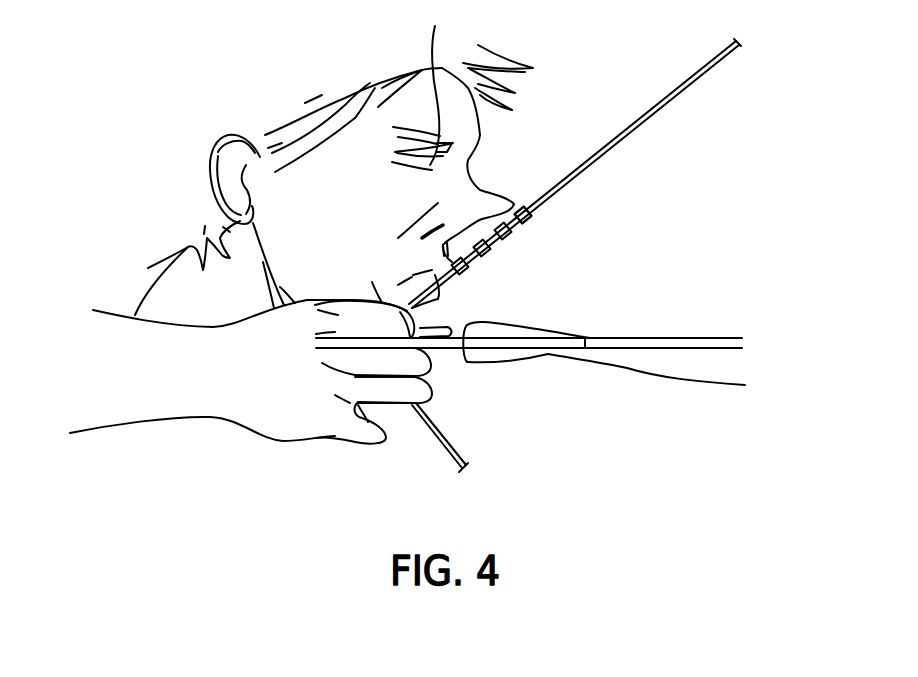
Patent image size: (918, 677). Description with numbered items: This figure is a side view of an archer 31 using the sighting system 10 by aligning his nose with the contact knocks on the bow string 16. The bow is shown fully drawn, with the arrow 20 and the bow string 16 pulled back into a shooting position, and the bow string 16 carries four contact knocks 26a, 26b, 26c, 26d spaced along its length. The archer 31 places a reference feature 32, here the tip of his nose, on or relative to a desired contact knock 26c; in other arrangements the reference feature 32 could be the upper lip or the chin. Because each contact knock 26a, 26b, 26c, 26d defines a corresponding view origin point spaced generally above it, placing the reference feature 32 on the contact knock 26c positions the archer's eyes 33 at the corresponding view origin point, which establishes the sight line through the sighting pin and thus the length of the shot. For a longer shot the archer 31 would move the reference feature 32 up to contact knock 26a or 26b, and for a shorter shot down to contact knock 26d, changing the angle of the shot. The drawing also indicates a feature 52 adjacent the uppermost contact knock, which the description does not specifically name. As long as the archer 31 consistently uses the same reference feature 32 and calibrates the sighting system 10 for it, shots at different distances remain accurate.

The sighting system 10 is at (603, 86).
The bow string 16 is at (658, 103).
The arrow 20 is at (675, 338).
The contact knock 26a is at (529, 218).
The contact knock 26b is at (508, 236).
The contact knock 26c is at (487, 254).
The contact knock 26d is at (463, 270).
The reference marker 52 is at (531, 216).
The archer 31 is at (357, 145).
The reference feature 32 is at (486, 214).
The archer's eyes 33 is at (440, 84).